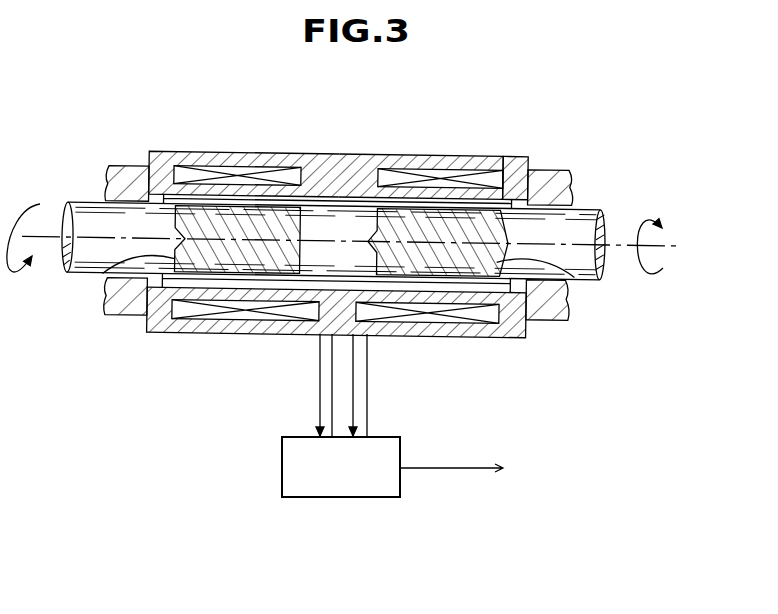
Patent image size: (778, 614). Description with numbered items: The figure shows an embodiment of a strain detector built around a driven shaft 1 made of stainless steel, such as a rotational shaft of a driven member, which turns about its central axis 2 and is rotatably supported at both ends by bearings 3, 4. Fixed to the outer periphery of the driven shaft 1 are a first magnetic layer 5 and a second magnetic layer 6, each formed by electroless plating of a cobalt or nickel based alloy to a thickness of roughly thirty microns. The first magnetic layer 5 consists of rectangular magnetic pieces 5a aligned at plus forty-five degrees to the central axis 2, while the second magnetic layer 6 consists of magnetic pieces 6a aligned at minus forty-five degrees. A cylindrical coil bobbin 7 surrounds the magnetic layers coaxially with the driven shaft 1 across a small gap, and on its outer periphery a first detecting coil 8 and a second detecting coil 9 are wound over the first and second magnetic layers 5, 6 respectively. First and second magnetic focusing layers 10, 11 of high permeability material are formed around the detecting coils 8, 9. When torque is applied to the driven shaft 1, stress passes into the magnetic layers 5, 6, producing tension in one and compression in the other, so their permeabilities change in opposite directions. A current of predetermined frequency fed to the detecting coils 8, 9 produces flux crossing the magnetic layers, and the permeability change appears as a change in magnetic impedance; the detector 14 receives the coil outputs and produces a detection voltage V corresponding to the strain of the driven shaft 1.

The driven shaft 1 is at (583, 221).
The central axis 2 is at (678, 245).
The bearing 3 is at (552, 180).
The bearing 4 is at (128, 165).
The first magnetic layer 5 is at (447, 256).
The rectangular magnetic pieces 5a is at (573, 278).
The second magnetic layer 6 is at (242, 258).
The magnetic pieces 6a is at (103, 274).
The coil bobbin 7 is at (517, 162).
The first detecting coil 8 is at (478, 177).
The second detecting coil 9 is at (282, 177).
The first magnetic focusing layer 10 is at (425, 155).
The second magnetic focusing layer 11 is at (213, 151).
The detector 14 is at (402, 456).